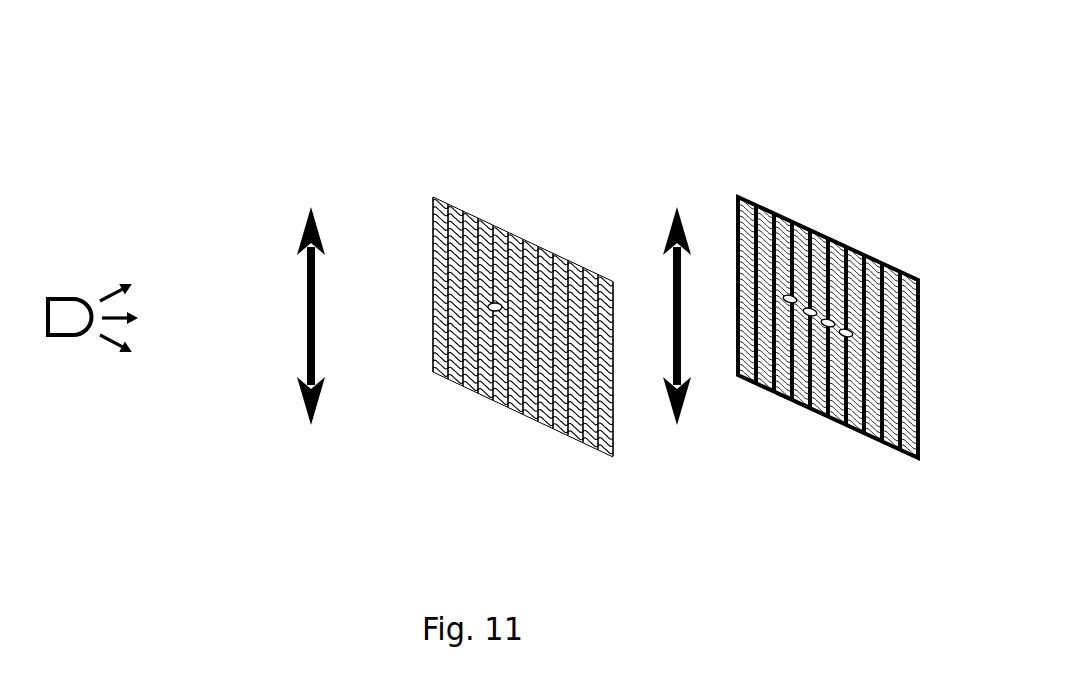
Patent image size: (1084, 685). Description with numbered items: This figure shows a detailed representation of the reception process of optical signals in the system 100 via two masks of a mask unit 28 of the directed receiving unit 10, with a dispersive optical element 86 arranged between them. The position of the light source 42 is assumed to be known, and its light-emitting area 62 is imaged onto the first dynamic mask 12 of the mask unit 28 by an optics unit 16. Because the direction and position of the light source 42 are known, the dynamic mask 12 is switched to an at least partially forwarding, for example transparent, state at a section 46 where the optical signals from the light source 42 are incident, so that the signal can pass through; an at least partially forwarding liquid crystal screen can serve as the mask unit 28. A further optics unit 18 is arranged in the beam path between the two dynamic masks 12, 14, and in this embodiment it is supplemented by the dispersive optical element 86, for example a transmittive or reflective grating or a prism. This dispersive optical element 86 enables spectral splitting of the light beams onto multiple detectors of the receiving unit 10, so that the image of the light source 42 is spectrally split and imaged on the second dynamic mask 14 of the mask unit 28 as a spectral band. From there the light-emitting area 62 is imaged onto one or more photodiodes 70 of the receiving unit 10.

The system 100 is at (646, 120).
The light source 42 is at (93, 287).
The light-emitting area 62 is at (55, 298).
The optics unit 16 is at (311, 206).
The dynamic mask 12 is at (484, 218).
The mask unit 28 is at (685, 300).
The section 46 is at (495, 311).
The further optics unit 18 is at (700, 283).
The dispersive optical element 86 is at (679, 207).
The dynamic mask 14 is at (838, 300).
The receiving unit 10 is at (838, 319).
The photodiode 70 is at (866, 258).